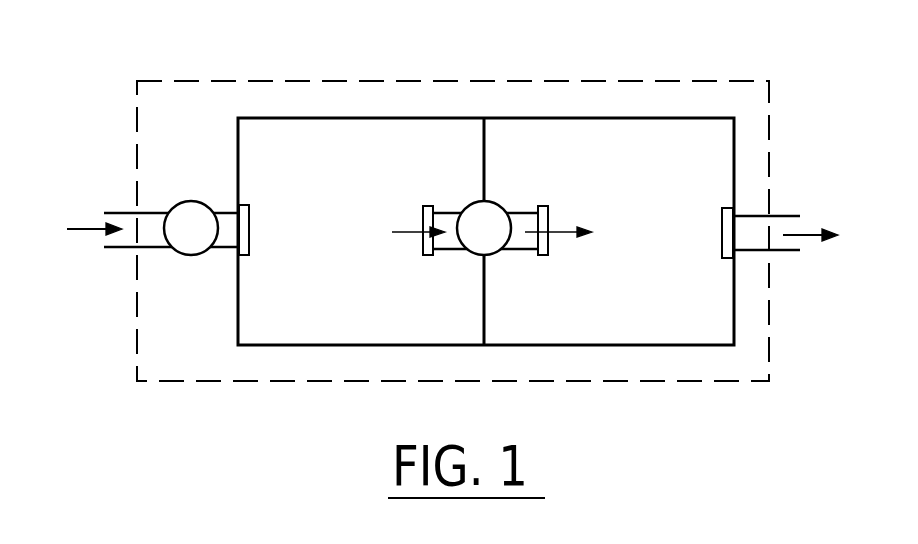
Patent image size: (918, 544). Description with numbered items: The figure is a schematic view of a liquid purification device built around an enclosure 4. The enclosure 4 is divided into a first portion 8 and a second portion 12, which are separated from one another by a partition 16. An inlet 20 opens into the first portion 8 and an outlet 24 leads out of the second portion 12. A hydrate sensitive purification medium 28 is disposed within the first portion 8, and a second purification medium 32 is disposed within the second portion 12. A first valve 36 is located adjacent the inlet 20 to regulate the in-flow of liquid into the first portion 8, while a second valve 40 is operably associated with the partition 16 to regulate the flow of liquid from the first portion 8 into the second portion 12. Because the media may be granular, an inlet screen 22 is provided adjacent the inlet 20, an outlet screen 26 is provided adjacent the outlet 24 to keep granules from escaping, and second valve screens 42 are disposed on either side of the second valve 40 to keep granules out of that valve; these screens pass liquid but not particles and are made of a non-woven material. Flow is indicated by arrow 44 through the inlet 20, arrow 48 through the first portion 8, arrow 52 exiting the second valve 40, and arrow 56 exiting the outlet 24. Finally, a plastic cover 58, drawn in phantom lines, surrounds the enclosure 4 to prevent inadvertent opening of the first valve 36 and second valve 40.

The enclosure 4 is at (546, 118).
The first portion 8 is at (286, 150).
The second portion 12 is at (655, 153).
The partition 16 is at (483, 160).
The inlet 20 is at (116, 212).
The inlet screen 22 is at (249, 235).
The outlet 24 is at (790, 215).
The outlet screen 26 is at (720, 236).
The hydrate sensitive purification medium 28 is at (331, 218).
The second purification medium 32 is at (661, 222).
The first valve 36 is at (186, 255).
The second valve 40 is at (473, 250).
The second valve screens 42 is at (423, 213).
The arrow 44 is at (78, 230).
The arrow 48 is at (395, 232).
The arrow 52 is at (556, 236).
The arrow 56 is at (808, 237).
The cover 58 is at (685, 382).